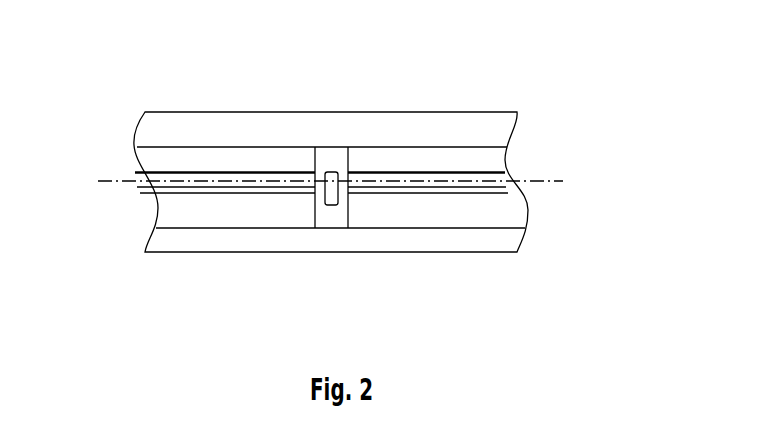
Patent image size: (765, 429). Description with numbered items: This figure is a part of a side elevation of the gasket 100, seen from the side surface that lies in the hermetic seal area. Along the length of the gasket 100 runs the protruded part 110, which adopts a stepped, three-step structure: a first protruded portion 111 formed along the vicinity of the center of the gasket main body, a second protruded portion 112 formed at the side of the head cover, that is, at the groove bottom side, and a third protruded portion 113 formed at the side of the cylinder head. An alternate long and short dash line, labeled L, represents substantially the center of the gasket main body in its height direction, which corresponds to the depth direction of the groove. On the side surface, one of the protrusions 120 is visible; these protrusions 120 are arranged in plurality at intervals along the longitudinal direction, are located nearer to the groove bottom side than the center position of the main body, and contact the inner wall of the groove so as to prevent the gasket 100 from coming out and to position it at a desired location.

The gasket 100 is at (335, 184).
The protruded part 110 is at (335, 184).
The first protruded portion 111 is at (500, 181).
The second protruded portion 112 is at (448, 215).
The third protruded portion 113 is at (412, 157).
The protrusions 120 is at (333, 193).